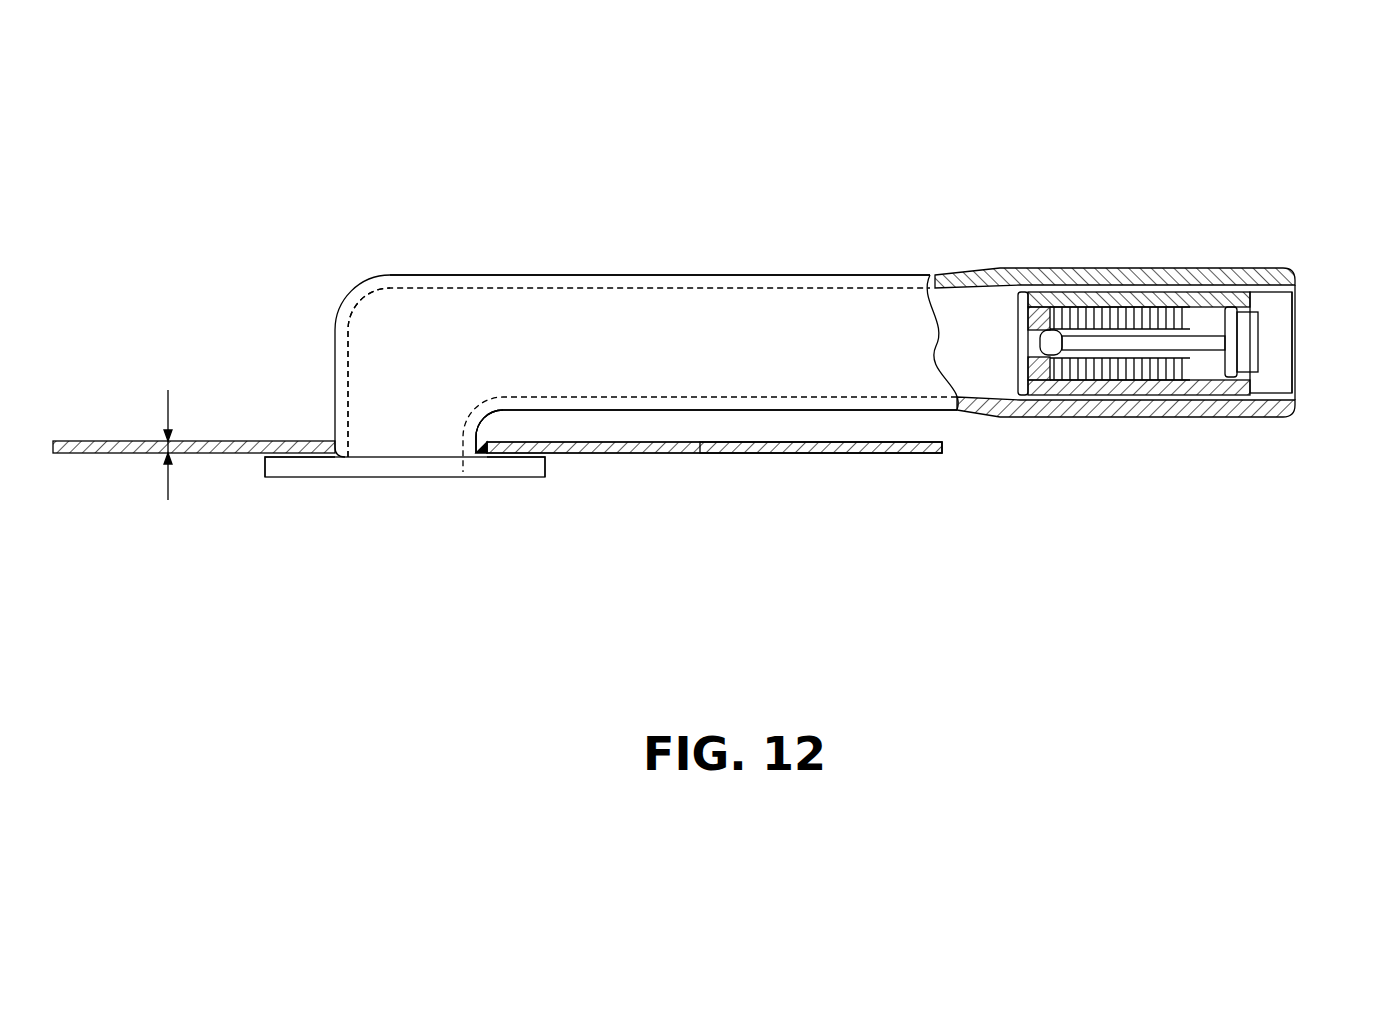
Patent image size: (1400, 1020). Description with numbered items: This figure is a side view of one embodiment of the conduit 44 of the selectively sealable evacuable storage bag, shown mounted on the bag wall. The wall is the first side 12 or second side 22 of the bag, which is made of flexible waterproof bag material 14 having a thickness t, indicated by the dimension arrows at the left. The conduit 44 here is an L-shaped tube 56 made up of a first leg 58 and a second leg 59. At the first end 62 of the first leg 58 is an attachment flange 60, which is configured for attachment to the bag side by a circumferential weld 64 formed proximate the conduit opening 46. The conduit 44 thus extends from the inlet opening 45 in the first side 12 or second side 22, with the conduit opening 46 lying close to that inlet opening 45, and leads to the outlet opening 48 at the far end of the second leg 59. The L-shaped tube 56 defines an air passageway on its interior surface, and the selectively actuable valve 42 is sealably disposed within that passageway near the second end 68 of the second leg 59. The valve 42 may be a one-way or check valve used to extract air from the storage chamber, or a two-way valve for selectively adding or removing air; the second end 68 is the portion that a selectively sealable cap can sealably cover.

The first side 12 is at (906, 454).
The second side 22 is at (714, 447).
The flexible waterproof bag material 14 is at (829, 455).
The selectively actuable valve 42 is at (1172, 406).
The conduit 44 is at (1133, 330).
The inlet opening 45 is at (478, 455).
The conduit opening 46 is at (395, 432).
The outlet opening 48 is at (1275, 318).
The L-shaped tube 56 is at (673, 276).
The first leg 58 is at (490, 421).
The second leg 59 is at (588, 275).
The attachment flange 60 is at (297, 478).
The first end 62 is at (264, 468).
The circumferential weld 64 is at (524, 455).
The second end 68 is at (1297, 357).
The thickness t is at (169, 413).